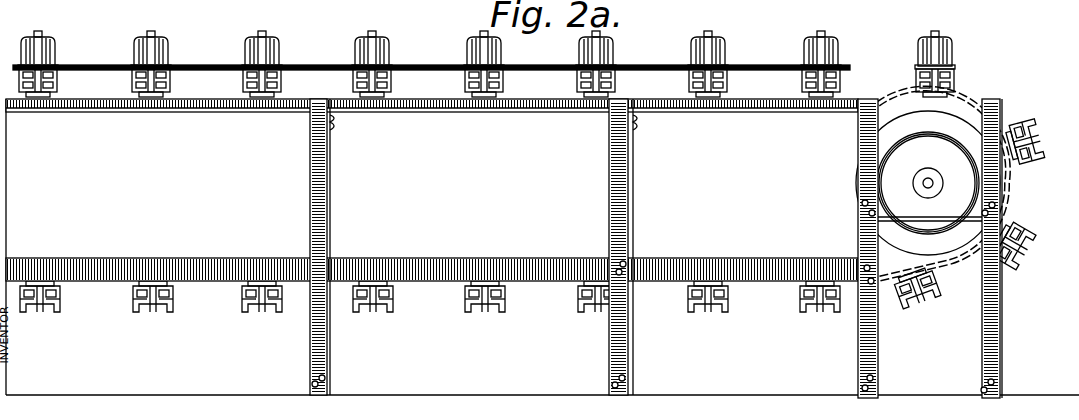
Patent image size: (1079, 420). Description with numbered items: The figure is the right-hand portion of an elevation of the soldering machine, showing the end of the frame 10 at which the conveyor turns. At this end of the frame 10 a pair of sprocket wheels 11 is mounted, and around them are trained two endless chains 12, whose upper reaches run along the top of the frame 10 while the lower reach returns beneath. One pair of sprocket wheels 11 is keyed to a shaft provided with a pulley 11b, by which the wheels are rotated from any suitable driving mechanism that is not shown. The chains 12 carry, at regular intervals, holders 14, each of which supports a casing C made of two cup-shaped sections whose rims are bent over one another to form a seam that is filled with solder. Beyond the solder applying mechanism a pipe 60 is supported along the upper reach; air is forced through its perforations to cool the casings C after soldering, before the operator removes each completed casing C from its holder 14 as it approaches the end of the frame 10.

The frame 10 is at (318, 189).
The sprocket wheels 11 is at (935, 184).
The pulley 11b is at (940, 228).
The endless chains 12 is at (945, 127).
The holder 14 is at (133, 80).
The pipe 60 is at (313, 65).
The casing C is at (252, 55).